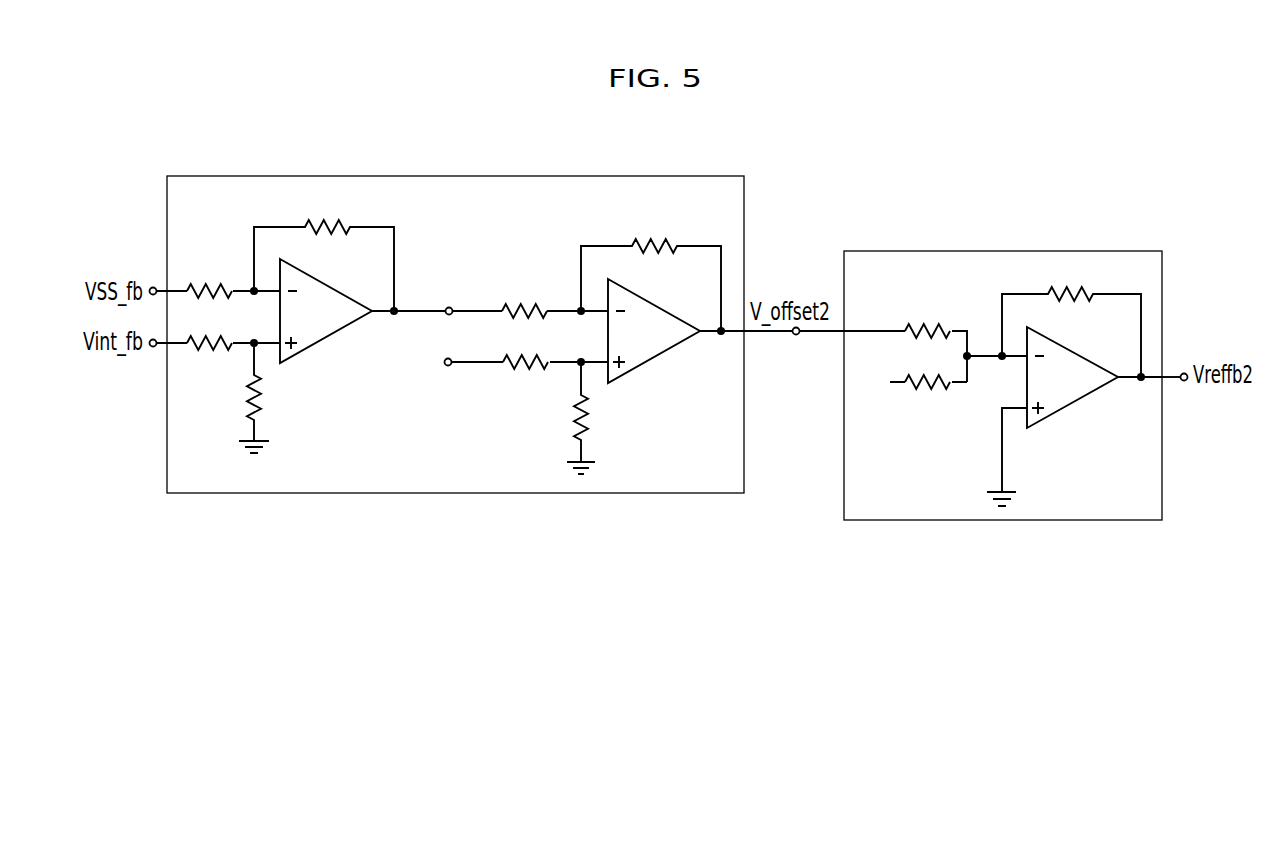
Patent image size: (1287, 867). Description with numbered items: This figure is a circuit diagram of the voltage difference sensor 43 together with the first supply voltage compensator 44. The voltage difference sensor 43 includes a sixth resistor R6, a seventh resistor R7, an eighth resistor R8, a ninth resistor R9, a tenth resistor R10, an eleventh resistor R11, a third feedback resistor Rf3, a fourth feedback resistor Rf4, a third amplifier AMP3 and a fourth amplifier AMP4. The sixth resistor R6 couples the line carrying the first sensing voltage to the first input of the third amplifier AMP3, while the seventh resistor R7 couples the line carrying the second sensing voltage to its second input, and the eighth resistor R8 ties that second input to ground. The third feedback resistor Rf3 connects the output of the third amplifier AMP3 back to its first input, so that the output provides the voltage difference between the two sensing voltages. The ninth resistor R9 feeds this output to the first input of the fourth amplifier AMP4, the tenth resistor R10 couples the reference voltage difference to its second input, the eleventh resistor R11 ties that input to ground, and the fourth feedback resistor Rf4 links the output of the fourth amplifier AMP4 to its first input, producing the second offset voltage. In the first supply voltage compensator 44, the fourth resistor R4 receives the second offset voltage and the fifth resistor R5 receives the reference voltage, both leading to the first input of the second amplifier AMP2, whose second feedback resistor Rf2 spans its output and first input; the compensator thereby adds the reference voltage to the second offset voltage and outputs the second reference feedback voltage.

The voltage difference sensor 43 is at (456, 176).
The first supply voltage compensator 44 is at (1060, 251).
The fourth resistor R4 is at (927, 315).
The fifth resistor R5 is at (927, 399).
The sixth resistor R6 is at (209, 276).
The seventh resistor R7 is at (209, 358).
The eighth resistor R8 is at (263, 398).
The ninth resistor R9 is at (524, 296).
The tenth resistor R10 is at (525, 375).
The eleventh resistor R11 is at (595, 418).
The second feedback resistor Rf2 is at (1071, 316).
The third feedback resistor Rf3 is at (324, 251).
The fourth feedback resistor Rf4 is at (651, 271).
The second amplifier AMP2 is at (1072, 377).
The third amplifier AMP3 is at (326, 311).
The fourth amplifier AMP4 is at (654, 331).